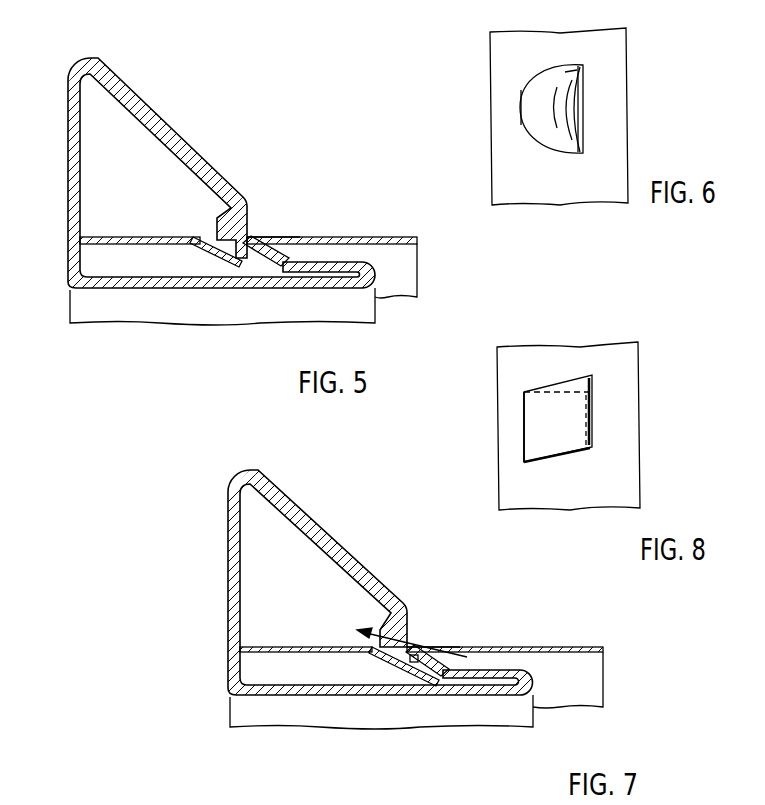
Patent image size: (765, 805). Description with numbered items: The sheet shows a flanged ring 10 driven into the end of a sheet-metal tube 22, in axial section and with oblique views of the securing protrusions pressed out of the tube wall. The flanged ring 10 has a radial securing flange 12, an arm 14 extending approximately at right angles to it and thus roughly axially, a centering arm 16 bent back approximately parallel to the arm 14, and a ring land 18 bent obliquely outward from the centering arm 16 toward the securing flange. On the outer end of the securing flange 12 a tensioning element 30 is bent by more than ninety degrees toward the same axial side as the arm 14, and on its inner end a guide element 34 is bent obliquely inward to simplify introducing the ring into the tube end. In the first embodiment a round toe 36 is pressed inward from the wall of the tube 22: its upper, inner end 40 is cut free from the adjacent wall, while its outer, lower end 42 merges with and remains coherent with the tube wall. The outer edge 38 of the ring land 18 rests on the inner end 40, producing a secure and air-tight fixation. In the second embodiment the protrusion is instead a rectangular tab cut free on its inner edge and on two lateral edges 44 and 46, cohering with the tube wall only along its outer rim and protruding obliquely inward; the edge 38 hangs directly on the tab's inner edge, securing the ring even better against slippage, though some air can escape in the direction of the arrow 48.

In FIG. 5, the flanged ring 10 is at (64, 237).
In FIG. 7, the flanged ring 10 is at (224, 650).
In FIG. 5, the radial securing flange 12 is at (75, 127).
In FIG. 7, the radial securing flange 12 is at (235, 536).
In FIG. 5, the arm 14 is at (110, 288).
In FIG. 7, the arm 14 is at (295, 695).
In FIG. 5, the centering arm 16 is at (347, 266).
In FIG. 7, the centering arm 16 is at (490, 672).
In FIG. 5, the ring land 18 is at (290, 240).
In FIG. 7, the ring land 18 is at (443, 650).
In FIG. 5, the tube 22 is at (388, 237).
In FIG. 6, the tube 22 is at (604, 36).
In FIG. 8, the tube 22 is at (622, 368).
In FIG. 7, the tube 22 is at (555, 647).
In FIG. 5, the tensioning element 30 is at (175, 135).
In FIG. 7, the tensioning element 30 is at (333, 542).
In FIG. 5, the guide element 34 is at (245, 215).
In FIG. 7, the guide element 34 is at (402, 615).
In FIG. 5, the round toe 36 is at (233, 247).
In FIG. 6, the round toe 36 is at (588, 72).
In FIG. 8, the round toe 36 is at (573, 405).
In FIG. 7, the round toe 36 is at (397, 660).
In FIG. 5, the outer edge of the ring land 38 is at (265, 257).
In FIG. 7, the outer edge of the ring land 38 is at (420, 660).
In FIG. 6, the inner end of the toe 40 is at (578, 118).
In FIG. 8, the inner end of the toe 40 is at (590, 413).
In FIG. 7, the inner end of the toe 40 is at (445, 680).
In FIG. 6, the outer lower end of the toe 42 is at (522, 107).
In FIG. 8, the outer lower end of the toe 42 is at (522, 425).
In FIG. 8, the lateral edge of the tab 44 is at (550, 380).
In FIG. 8, the lateral edge of the tab 46 is at (570, 452).
In FIG. 7, the arrow 48 is at (400, 640).